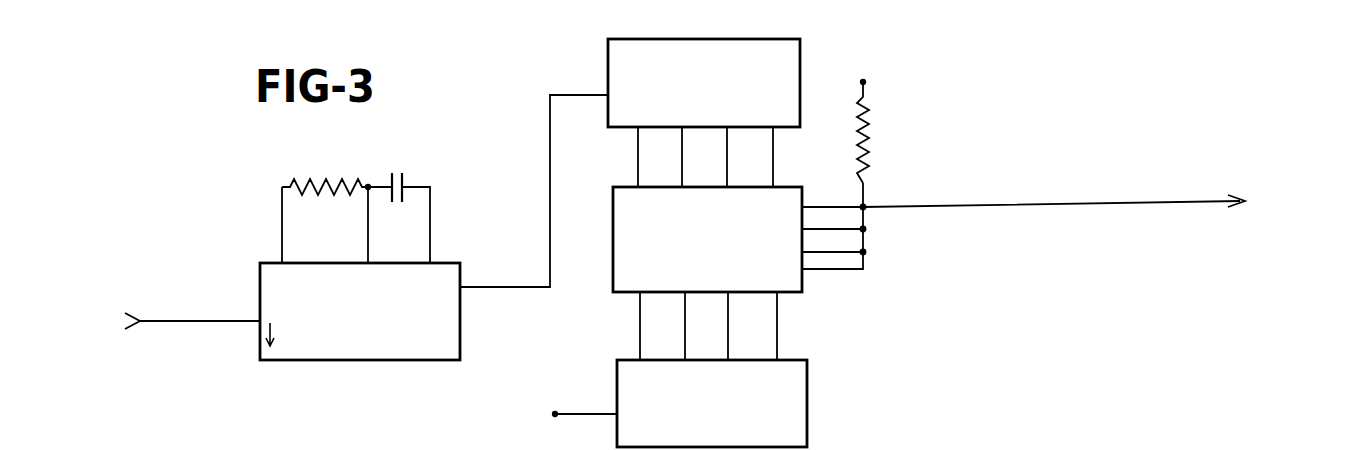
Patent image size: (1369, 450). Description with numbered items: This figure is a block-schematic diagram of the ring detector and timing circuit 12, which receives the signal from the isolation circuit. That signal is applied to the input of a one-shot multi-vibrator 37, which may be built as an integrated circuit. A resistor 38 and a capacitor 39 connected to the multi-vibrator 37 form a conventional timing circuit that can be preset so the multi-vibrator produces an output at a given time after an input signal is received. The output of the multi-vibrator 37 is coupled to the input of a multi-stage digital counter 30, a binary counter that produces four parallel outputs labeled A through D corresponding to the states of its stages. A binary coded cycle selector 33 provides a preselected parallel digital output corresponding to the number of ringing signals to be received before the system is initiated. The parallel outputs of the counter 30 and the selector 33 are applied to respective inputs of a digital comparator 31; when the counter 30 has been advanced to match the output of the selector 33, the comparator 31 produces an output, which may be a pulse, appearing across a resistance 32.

The ring detector and timing circuit 12 is at (690, 243).
The multi-stage digital counter 30 is at (704, 83).
The digital comparator 31 is at (707, 239).
The resistance 32 is at (866, 103).
The binary coded cycle selector 33 is at (807, 428).
The multi-vibrator 37 is at (360, 311).
The resistor 38 is at (325, 173).
The capacitor 39 is at (391, 175).